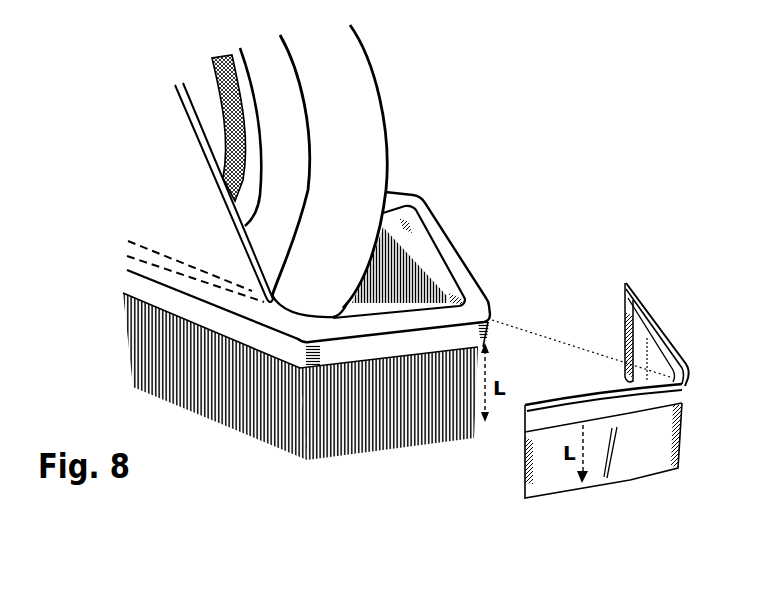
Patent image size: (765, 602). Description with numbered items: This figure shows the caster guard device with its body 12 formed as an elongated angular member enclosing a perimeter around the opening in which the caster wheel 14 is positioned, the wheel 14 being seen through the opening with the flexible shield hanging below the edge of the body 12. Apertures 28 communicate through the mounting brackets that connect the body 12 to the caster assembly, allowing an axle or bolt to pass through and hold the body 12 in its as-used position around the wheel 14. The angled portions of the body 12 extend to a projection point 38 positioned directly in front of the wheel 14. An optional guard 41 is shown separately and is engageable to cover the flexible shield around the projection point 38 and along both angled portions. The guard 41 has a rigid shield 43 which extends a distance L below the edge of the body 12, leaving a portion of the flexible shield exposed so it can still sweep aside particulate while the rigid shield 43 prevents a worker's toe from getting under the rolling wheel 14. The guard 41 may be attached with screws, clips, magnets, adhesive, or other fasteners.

The body 12 is at (420, 196).
The caster wheel 14 is at (360, 107).
The apertures 28 is at (190, 186).
The projection point 38 is at (476, 303).
The guard 41 is at (643, 303).
The rigid shield 43 is at (543, 478).